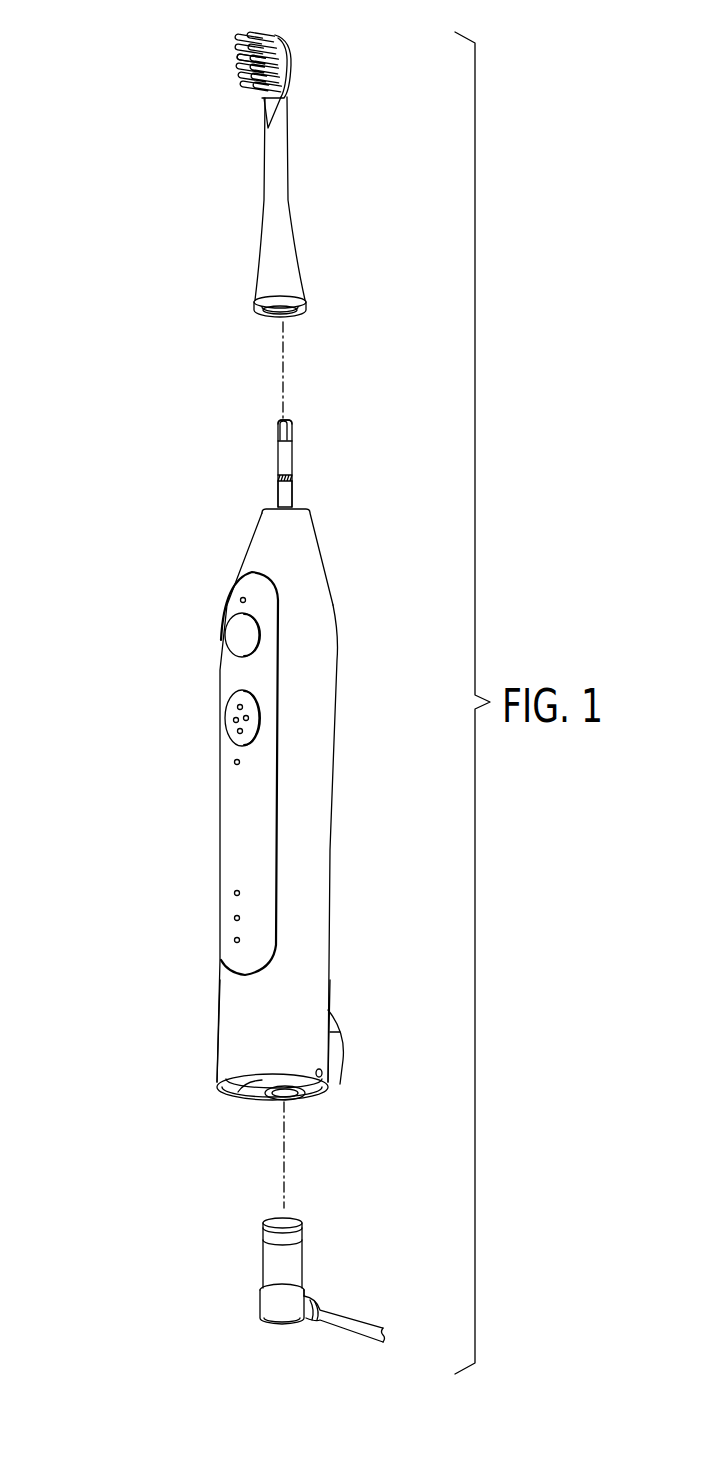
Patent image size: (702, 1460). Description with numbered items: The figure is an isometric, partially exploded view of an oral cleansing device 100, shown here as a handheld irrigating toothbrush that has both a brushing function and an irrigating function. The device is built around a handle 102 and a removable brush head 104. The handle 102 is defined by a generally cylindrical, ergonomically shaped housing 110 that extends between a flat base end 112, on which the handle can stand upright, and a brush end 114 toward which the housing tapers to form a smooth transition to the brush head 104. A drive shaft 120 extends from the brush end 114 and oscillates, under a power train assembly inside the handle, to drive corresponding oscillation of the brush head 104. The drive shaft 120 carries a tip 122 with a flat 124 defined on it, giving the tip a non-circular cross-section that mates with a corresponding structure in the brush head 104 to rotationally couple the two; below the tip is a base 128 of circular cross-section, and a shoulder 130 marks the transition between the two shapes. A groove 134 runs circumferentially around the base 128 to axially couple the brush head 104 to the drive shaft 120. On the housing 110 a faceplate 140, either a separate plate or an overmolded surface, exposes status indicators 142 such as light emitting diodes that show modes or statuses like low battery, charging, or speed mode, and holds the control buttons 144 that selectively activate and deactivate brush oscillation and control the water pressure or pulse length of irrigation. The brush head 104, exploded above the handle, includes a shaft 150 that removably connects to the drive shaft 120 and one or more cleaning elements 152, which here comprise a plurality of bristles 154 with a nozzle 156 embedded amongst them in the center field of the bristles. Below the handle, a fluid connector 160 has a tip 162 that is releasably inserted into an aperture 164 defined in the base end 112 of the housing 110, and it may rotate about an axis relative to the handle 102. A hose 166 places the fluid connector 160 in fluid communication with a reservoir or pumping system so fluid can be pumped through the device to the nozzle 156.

The oral cleansing device 100 is at (122, 577).
The handle 102 is at (312, 830).
The brush head 104 is at (282, 183).
The housing 110 is at (238, 1030).
The base end 112 is at (238, 1088).
The brush end 114 is at (303, 533).
The drive shaft 120 is at (287, 455).
The tip 122 is at (293, 423).
The flat 124 is at (278, 423).
The base 128 is at (287, 492).
The shoulder 130 is at (278, 443).
The groove 134 is at (278, 480).
The faceplate 140 is at (243, 833).
The status indicators 142 is at (218, 904).
The control buttons 144 is at (232, 712).
The shaft 150 is at (278, 278).
The cleaning elements 152 is at (203, 65).
The bristles 154 is at (242, 80).
The nozzle 156 is at (251, 57).
The fluid connector 160 is at (263, 1305).
The tip 162 is at (303, 1262).
The aperture 164 is at (277, 1102).
The hose 166 is at (352, 1327).